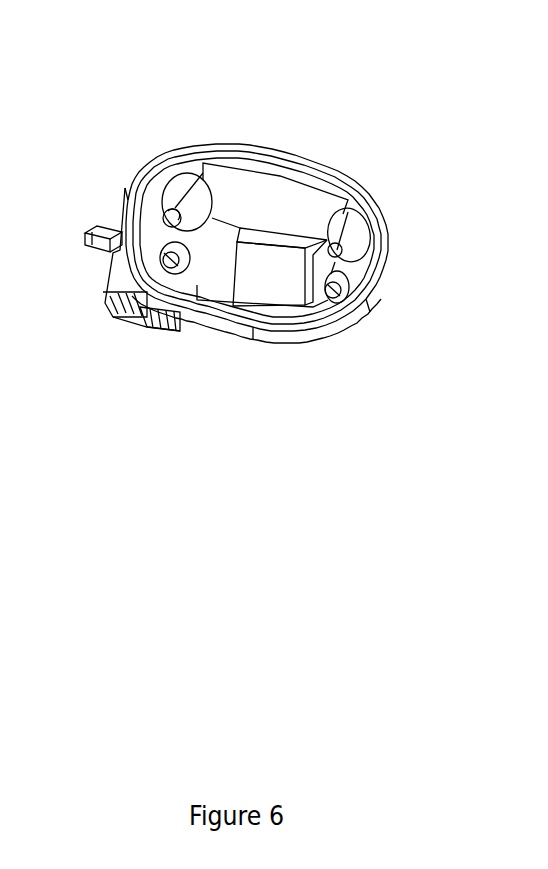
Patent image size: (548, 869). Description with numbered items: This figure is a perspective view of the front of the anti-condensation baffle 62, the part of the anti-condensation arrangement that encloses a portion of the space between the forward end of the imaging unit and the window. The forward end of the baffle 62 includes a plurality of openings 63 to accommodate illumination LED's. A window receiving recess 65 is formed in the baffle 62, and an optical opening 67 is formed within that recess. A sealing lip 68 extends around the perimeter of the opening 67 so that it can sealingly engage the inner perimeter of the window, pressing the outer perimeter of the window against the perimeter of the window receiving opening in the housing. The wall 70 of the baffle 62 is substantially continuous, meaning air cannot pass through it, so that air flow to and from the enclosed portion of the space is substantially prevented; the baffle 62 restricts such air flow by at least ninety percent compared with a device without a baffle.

The baffle 62 is at (238, 241).
The openings 63 is at (187, 255).
The window receiving recess 65 is at (219, 307).
The optical opening 67 is at (273, 294).
The sealing lip 68 is at (339, 313).
The wall 70 is at (122, 281).